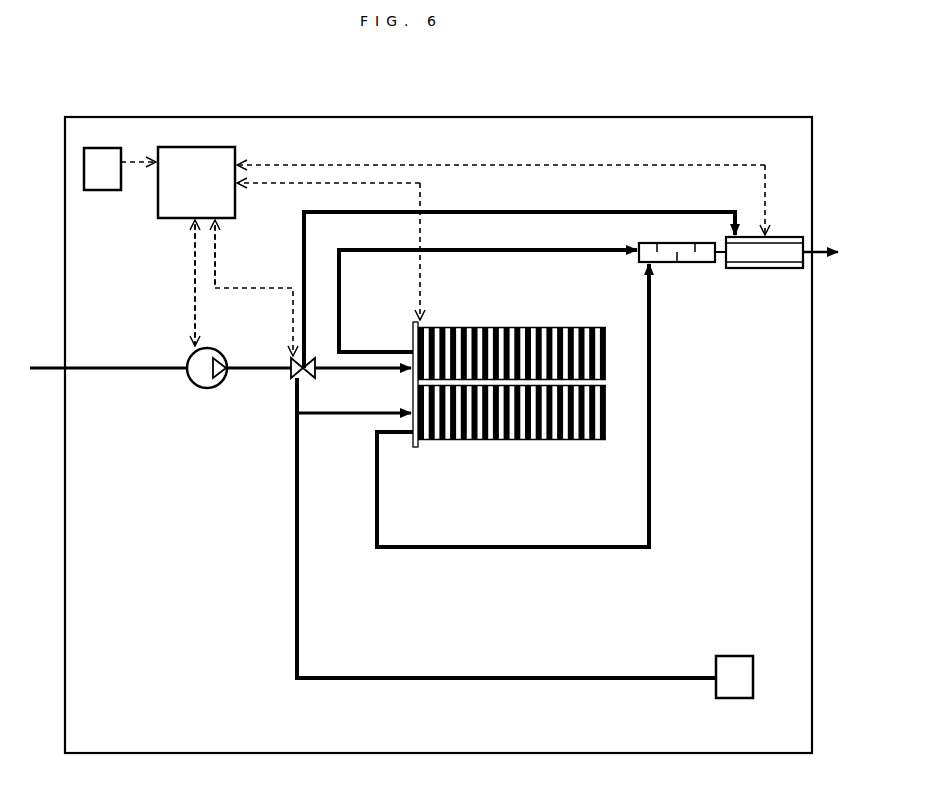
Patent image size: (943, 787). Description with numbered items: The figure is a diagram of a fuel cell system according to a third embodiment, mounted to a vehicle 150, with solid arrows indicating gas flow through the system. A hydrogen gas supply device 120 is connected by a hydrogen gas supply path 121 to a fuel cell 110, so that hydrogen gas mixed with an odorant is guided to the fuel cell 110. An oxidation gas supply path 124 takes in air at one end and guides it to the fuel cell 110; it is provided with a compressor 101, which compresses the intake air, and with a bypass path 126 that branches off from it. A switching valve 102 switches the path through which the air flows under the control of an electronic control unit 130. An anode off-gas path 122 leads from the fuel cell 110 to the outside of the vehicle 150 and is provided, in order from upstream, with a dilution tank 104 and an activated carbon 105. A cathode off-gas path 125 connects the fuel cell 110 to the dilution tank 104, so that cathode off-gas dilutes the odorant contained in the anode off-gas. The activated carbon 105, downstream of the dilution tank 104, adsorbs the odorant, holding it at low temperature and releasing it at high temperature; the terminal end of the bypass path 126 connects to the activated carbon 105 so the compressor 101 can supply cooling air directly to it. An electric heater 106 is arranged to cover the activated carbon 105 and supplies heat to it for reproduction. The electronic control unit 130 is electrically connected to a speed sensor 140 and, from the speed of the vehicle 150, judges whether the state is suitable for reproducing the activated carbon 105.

The vehicle 150 is at (590, 117).
The speed sensor 140 is at (105, 190).
The electronic control unit (ECU) 130 is at (235, 150).
The oxidation gas supply path 124 is at (255, 370).
The compressor 101 is at (205, 388).
The switching valve 102 is at (296, 380).
The bypass path 126 is at (525, 212).
The cathode off-gas path 125 is at (452, 257).
The hydrogen gas supply path 121 is at (430, 678).
The anode off-gas path 122 is at (650, 470).
The fuel cell 110 is at (530, 440).
The dilution tank 104 is at (685, 262).
The activated carbon 105 is at (748, 255).
The electric heater 106 is at (790, 268).
The hydrogen gas supply device 120 is at (735, 656).